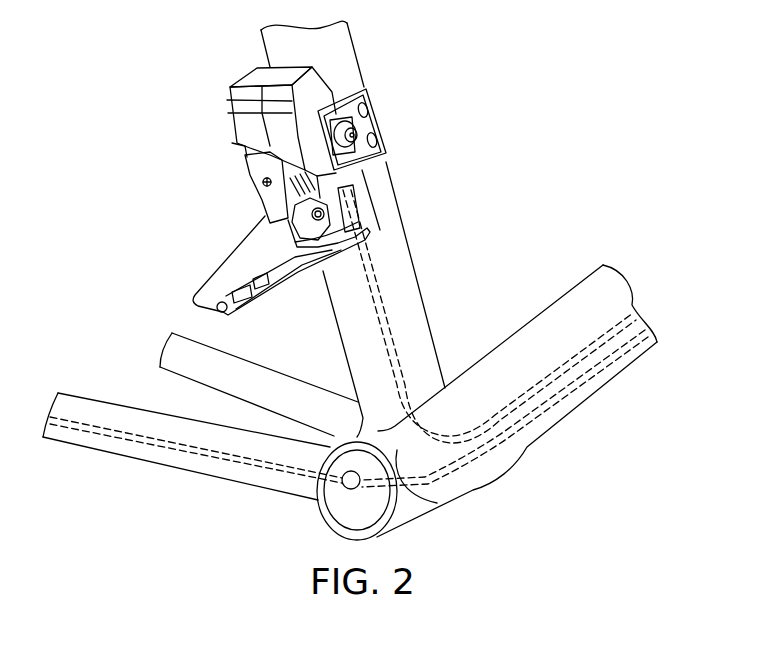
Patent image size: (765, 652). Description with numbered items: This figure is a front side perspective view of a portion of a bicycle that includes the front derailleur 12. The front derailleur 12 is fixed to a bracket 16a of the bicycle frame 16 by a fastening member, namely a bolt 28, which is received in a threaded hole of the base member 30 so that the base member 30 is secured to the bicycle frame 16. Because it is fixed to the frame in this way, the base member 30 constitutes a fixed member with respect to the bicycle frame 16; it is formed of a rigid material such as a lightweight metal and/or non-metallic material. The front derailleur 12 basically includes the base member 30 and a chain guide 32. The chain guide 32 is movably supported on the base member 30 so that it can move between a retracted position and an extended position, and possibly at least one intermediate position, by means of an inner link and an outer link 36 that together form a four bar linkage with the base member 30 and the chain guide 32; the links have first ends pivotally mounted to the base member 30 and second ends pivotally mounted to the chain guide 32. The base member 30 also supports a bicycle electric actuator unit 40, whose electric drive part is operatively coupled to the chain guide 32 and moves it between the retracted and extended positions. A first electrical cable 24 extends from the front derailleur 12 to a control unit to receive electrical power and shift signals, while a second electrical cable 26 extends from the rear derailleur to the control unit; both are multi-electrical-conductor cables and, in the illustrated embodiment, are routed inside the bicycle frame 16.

The front derailleur 12 is at (192, 120).
The bicycle frame 16 is at (362, 50).
The bracket 16a is at (380, 170).
The first electrical cable 24 is at (388, 324).
The second electrical cable 26 is at (121, 437).
The bolt 28 is at (380, 123).
The base member 30 is at (238, 172).
The chain guide 32 is at (226, 263).
The outer link 36 is at (272, 195).
The bicycle electric actuator unit 40 is at (222, 90).